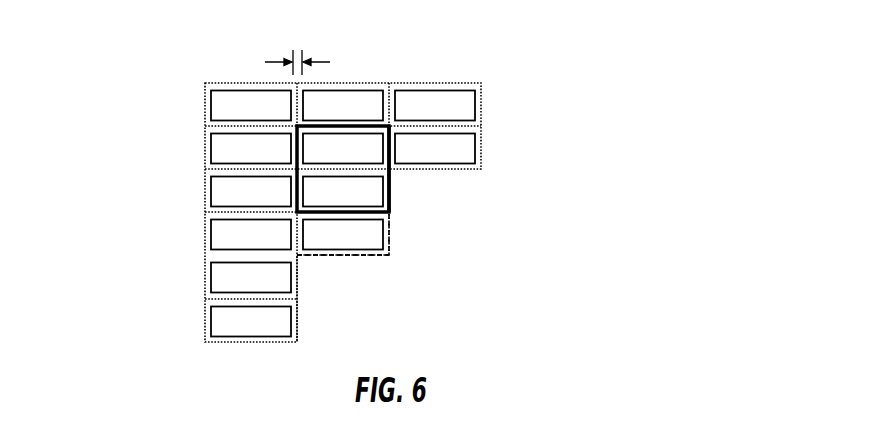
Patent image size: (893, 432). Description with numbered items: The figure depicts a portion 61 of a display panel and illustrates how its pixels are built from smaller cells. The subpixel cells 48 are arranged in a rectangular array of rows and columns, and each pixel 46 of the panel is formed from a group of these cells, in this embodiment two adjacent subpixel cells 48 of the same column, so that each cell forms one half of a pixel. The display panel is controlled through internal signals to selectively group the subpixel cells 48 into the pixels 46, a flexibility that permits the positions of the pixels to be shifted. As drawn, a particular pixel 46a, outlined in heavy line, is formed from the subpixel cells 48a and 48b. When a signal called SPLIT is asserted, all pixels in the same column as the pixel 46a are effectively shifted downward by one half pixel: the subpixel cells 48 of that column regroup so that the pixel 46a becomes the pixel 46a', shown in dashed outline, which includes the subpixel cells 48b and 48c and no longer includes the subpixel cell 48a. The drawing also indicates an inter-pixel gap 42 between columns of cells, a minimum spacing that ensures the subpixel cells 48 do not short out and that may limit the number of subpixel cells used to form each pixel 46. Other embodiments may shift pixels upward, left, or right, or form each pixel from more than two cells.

The portion of display panel 61 is at (75, 135).
The inter-pixel gap 42 is at (297, 48).
The subpixel cell 48 is at (218, 108).
The subpixel cell 48a is at (353, 138).
The subpixel cell 48b is at (338, 188).
The subpixel cell 48c is at (342, 243).
The pixel 46 is at (389, 195).
The pixel 46a is at (467, 148).
The pixel 46a' is at (356, 304).